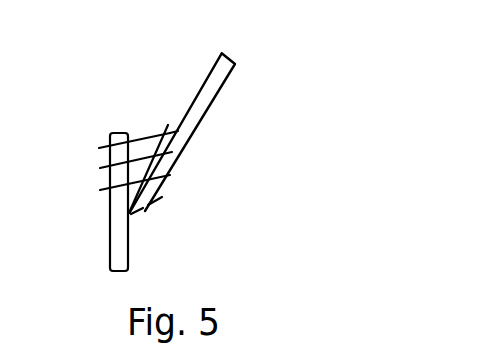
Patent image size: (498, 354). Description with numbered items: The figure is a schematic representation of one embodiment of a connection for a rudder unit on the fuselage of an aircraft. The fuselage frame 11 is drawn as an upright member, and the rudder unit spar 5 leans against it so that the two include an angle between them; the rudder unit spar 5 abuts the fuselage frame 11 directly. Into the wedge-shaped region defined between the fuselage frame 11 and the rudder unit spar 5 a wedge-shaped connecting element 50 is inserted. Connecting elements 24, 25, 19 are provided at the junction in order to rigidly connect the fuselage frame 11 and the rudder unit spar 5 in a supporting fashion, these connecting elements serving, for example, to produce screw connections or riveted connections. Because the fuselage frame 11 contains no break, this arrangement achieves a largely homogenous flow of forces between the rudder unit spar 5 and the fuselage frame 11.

The rudder unit spar 5 is at (213, 72).
The fuselage frame 11 is at (116, 237).
The connecting element 19 is at (170, 178).
The connecting element 24 is at (162, 197).
The connecting element 25 is at (143, 208).
The wedge-shaped connecting element 50 is at (152, 150).